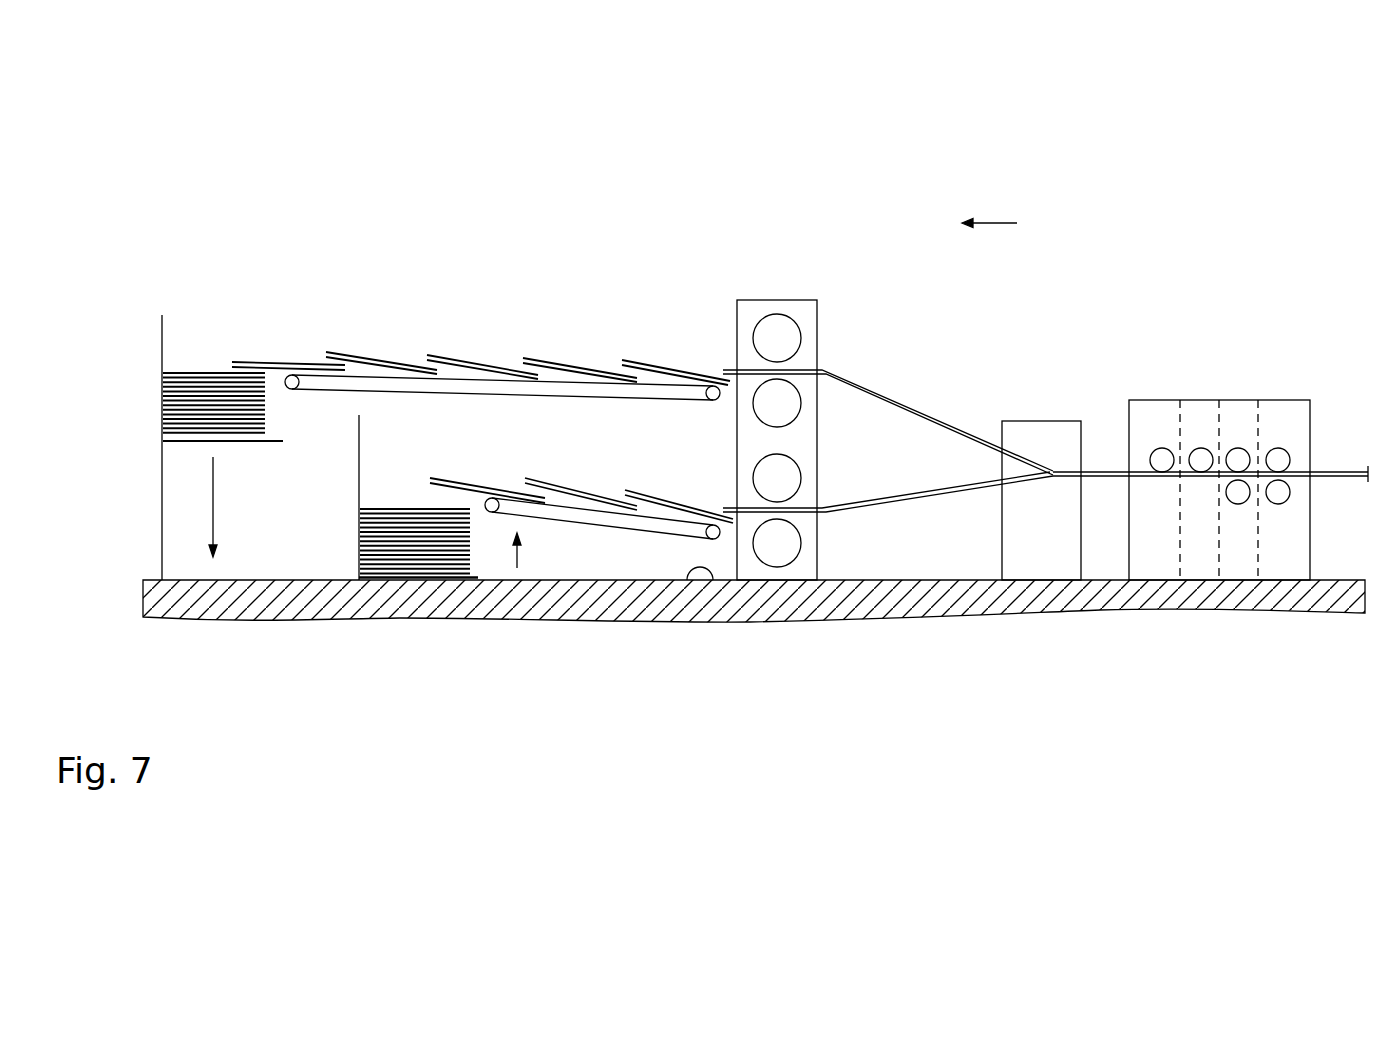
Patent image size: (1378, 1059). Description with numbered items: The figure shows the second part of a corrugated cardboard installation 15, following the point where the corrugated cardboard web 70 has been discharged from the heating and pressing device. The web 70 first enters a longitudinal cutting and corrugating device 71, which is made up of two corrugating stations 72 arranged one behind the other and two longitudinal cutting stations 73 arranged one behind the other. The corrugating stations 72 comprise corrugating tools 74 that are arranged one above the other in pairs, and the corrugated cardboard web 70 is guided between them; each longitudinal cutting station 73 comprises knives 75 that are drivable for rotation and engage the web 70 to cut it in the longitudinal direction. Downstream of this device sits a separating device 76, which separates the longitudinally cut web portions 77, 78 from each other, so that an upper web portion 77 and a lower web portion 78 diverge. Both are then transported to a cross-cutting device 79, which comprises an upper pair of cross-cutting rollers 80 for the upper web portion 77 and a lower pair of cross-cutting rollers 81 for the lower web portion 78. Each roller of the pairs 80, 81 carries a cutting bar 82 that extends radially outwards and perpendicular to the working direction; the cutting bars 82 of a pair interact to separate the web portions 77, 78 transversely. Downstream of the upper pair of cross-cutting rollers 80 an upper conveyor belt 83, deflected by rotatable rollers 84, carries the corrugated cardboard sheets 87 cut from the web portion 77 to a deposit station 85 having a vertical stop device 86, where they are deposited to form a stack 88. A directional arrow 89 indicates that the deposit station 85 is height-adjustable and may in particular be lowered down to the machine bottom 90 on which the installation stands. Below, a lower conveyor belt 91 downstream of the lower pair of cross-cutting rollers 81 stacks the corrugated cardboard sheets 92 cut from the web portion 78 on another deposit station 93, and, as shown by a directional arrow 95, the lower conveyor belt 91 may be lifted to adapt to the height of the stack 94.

The production system 15 is at (1000, 223).
The corrugated cardboard web 70 is at (1337, 472).
The longitudinal cutting and corrugating device 71 is at (1207, 392).
The corrugating stations 72 is at (1245, 412).
The longitudinal cutting stations 73 is at (1193, 412).
The corrugating tools 74 is at (1238, 462).
The knives 75 is at (1162, 462).
The separating device 76 is at (1050, 421).
The upper web portion 77 is at (920, 409).
The lower web portion 78 is at (897, 503).
The cross-cutting device 79 is at (803, 290).
The upper pair of cross-cutting rollers 80 is at (777, 403).
The lower pair of cross-cutting rollers 81 is at (777, 479).
The cutting bar 82 is at (796, 354).
The upper conveyor belt 83 is at (480, 376).
The rotatable rollers 84 is at (292, 376).
The deposit station 85 is at (283, 441).
The vertical stop device 86 is at (162, 347).
The corrugated cardboard sheets 87 is at (348, 352).
The stack 88 is at (208, 372).
The directional arrow 89 is at (213, 508).
The machine bottom 90 is at (687, 580).
The lower conveyor belt 91 is at (603, 527).
The corrugated cardboard sheets 92 is at (665, 498).
The deposit station 93 is at (422, 578).
The stack 94 is at (385, 508).
The directional arrow 95 is at (512, 553).